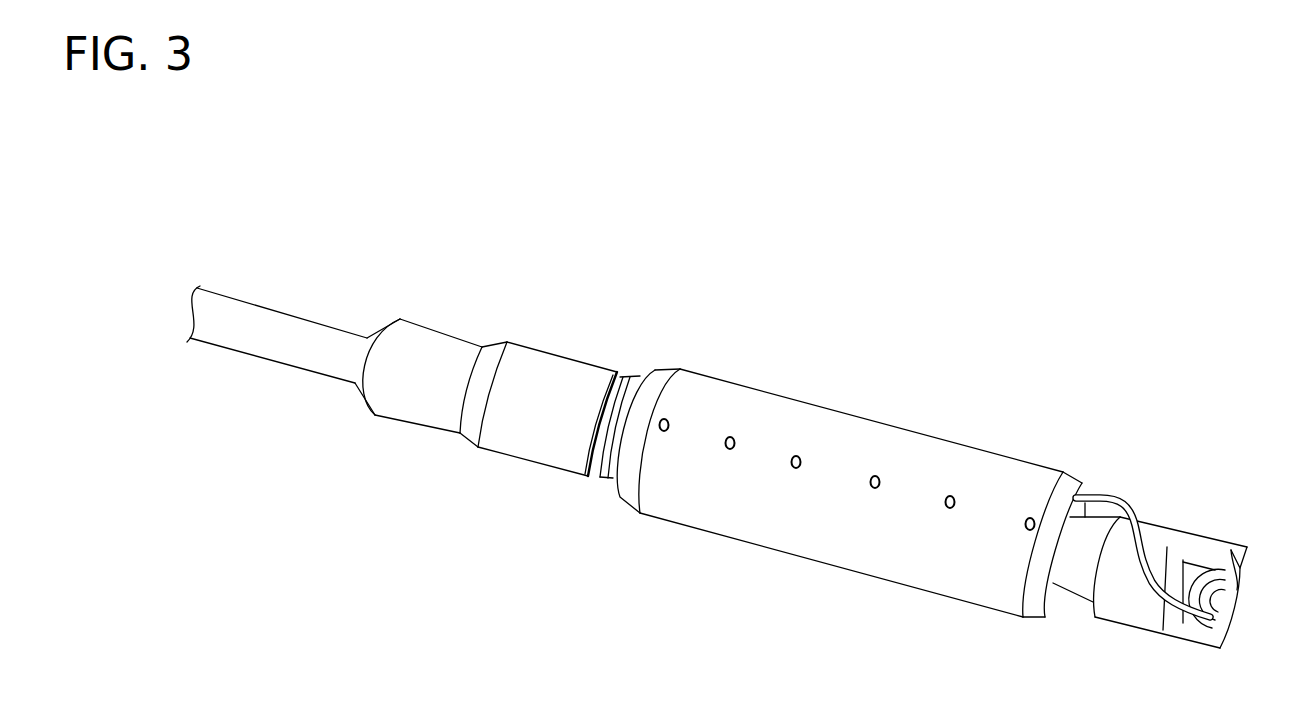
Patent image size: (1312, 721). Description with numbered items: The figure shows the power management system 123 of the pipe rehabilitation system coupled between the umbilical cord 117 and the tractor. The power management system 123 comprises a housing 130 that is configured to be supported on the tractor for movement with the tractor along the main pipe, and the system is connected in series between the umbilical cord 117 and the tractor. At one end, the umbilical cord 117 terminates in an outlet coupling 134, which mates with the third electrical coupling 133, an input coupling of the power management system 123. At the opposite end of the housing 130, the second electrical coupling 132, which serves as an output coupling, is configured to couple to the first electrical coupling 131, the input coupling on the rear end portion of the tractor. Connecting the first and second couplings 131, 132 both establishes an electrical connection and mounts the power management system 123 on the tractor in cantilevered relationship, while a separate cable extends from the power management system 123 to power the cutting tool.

The umbilical cord 117 is at (255, 320).
The power management system 123 is at (832, 465).
The housing 130 is at (740, 515).
The first electrical coupling 131 is at (1215, 547).
The second electrical coupling 132 is at (1163, 530).
The third electrical coupling 133 is at (628, 383).
The outlet coupling 134 is at (512, 430).